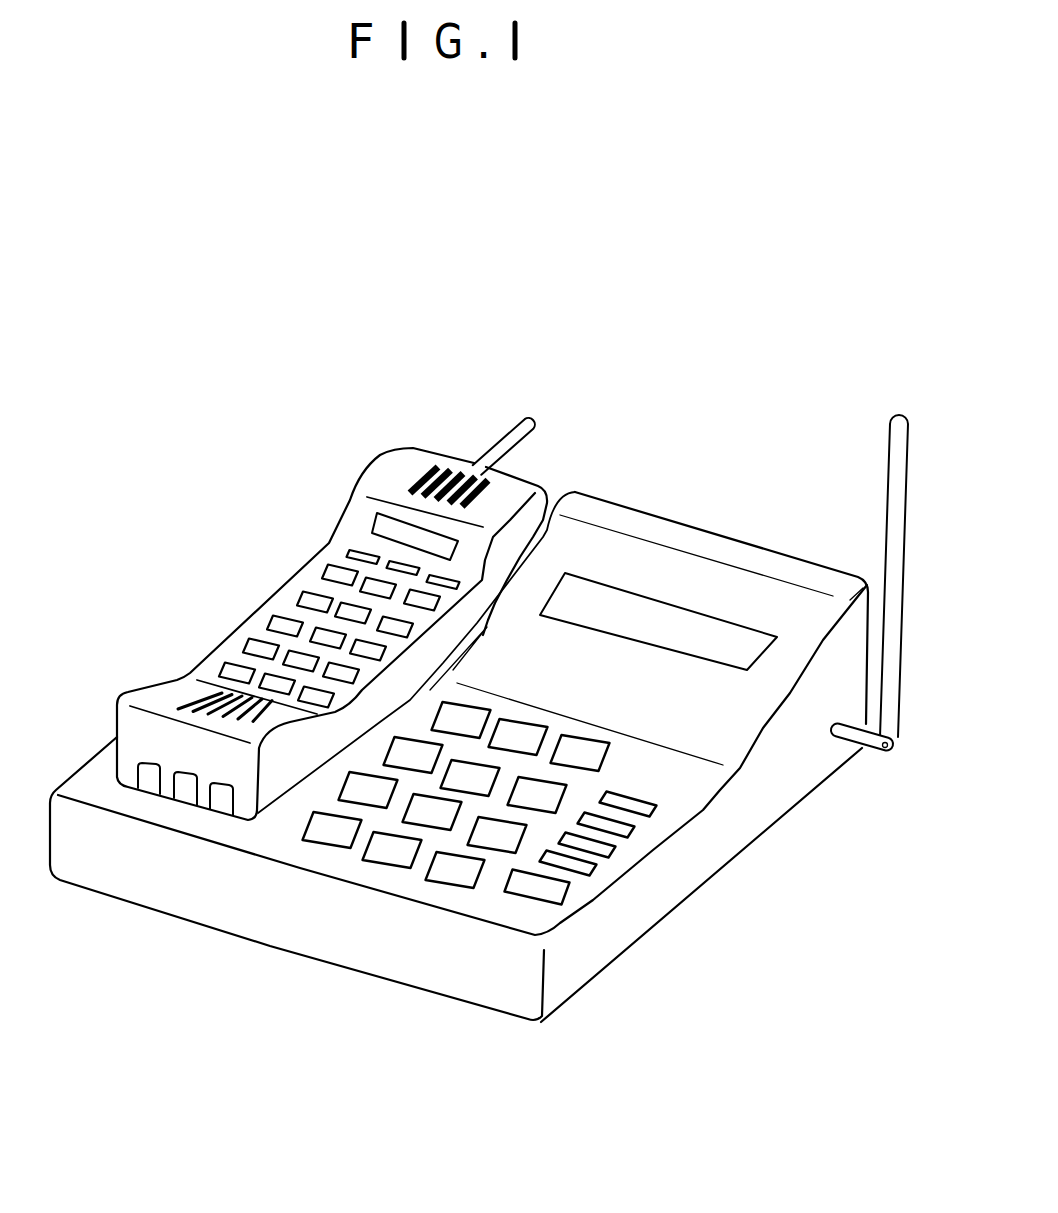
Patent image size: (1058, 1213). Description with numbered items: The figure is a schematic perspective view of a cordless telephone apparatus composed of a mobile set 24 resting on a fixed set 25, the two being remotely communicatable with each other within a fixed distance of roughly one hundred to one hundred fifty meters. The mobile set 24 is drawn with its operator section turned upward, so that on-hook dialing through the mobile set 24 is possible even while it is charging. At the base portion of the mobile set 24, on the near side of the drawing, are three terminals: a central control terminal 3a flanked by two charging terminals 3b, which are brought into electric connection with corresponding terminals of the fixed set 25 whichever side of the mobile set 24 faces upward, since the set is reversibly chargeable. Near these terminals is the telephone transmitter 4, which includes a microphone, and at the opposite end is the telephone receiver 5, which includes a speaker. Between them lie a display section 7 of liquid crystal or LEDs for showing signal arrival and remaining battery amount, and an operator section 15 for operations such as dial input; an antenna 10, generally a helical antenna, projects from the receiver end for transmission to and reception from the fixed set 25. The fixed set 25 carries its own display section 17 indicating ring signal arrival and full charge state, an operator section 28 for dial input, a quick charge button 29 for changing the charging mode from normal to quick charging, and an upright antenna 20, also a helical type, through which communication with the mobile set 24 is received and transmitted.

The control terminal 3a is at (183, 793).
The charging terminals 3b is at (148, 780).
The telephone transmitter 4 is at (172, 703).
The telephone receiver 5 is at (403, 475).
The display section 7 is at (367, 543).
The antenna 10 is at (497, 437).
The operator section 15 is at (290, 630).
The display section 17 is at (687, 623).
The antenna 20 is at (887, 530).
The mobile set 24 is at (293, 562).
The fixed set 25 is at (745, 874).
The operator section 28 is at (620, 722).
The quick charge button 29 is at (560, 886).